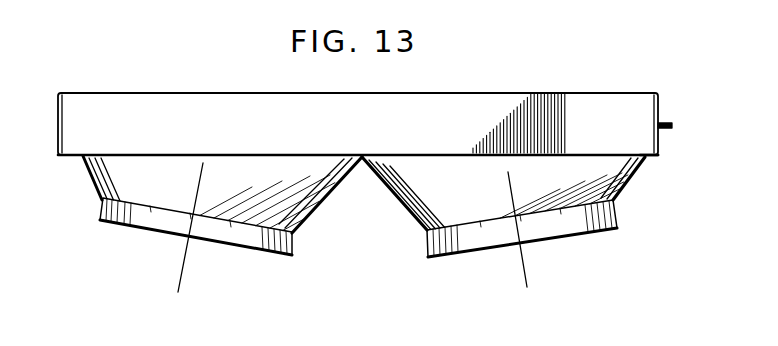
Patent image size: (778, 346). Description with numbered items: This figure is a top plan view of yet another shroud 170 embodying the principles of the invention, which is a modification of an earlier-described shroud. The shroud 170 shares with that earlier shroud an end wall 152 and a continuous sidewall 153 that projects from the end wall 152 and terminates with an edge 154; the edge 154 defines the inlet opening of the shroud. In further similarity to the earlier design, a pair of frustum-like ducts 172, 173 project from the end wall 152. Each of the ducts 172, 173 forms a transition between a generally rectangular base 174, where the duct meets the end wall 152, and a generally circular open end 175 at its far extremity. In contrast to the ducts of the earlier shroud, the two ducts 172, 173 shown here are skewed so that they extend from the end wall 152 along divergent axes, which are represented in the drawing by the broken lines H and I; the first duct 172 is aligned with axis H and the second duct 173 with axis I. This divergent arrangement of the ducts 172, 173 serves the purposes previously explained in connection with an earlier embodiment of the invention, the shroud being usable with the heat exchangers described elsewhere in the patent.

The sidewall 153 is at (187, 112).
The edge 154 is at (496, 94).
The shroud 170 is at (675, 126).
The end wall 152 is at (652, 157).
The duct 172 is at (88, 180).
The circular open end 175 is at (150, 232).
The rectangular base 174 is at (362, 160).
The duct 173 is at (418, 222).
The axis H is at (182, 283).
The axis I is at (526, 272).